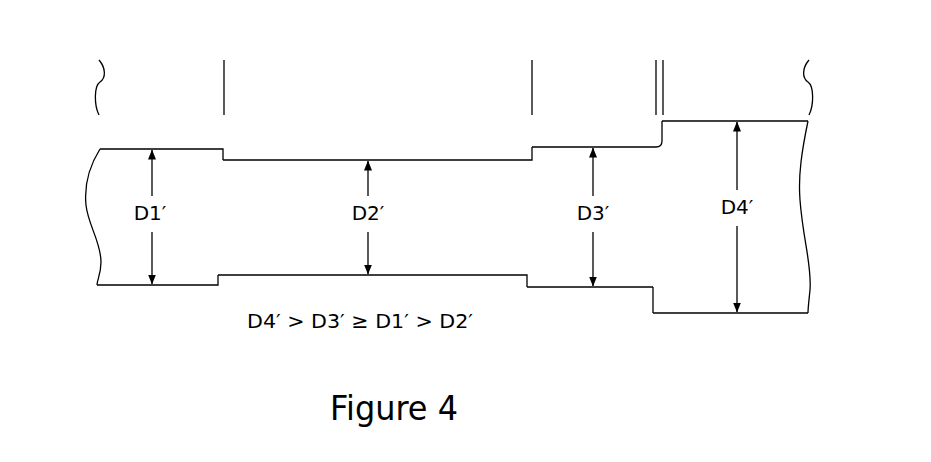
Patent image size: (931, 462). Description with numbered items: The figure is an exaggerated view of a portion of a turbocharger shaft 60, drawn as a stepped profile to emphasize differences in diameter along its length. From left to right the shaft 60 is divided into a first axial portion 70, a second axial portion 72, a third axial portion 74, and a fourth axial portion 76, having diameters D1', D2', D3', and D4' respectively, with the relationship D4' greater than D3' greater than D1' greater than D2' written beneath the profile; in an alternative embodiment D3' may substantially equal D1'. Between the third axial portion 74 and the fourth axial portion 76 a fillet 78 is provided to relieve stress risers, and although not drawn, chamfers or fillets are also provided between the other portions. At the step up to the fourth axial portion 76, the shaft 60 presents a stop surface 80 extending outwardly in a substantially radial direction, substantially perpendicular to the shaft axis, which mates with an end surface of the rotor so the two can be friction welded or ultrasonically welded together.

The shaft 60 is at (448, 215).
The first axial portion 70 is at (102, 82).
The second axial portion 72 is at (226, 82).
The third axial portion 74 is at (534, 82).
The fourth axial portion 76 is at (806, 82).
The fillet 78 is at (652, 289).
The stop surface 80 is at (653, 302).